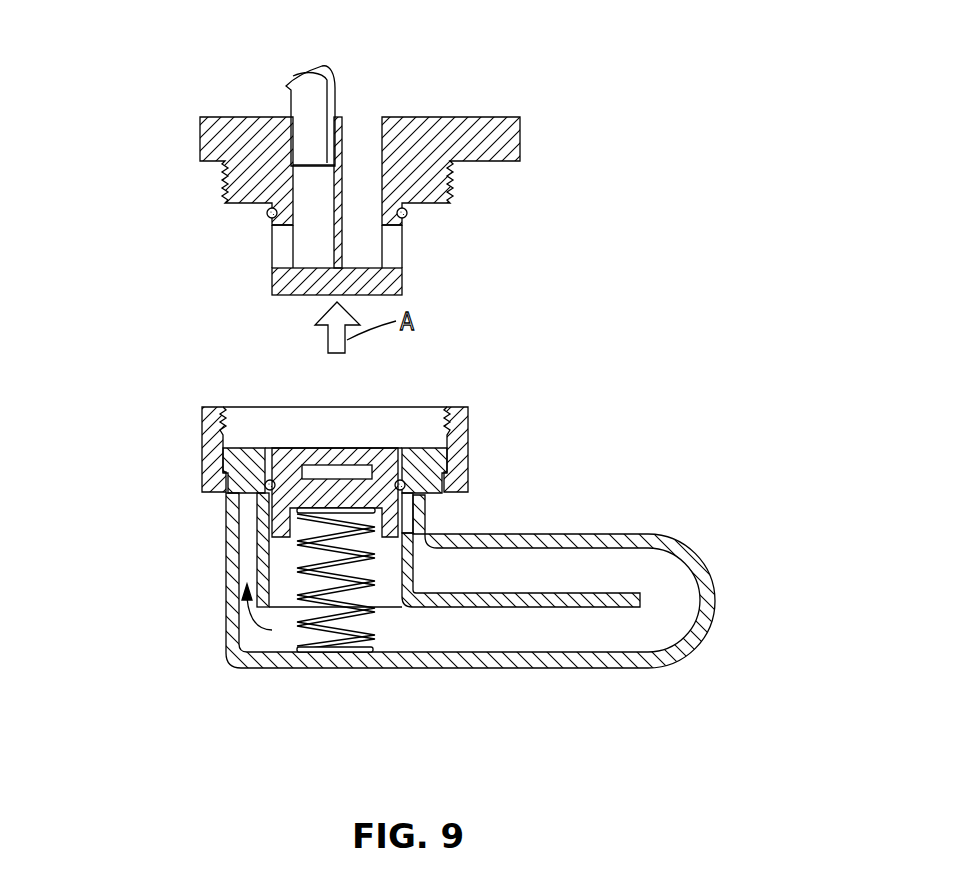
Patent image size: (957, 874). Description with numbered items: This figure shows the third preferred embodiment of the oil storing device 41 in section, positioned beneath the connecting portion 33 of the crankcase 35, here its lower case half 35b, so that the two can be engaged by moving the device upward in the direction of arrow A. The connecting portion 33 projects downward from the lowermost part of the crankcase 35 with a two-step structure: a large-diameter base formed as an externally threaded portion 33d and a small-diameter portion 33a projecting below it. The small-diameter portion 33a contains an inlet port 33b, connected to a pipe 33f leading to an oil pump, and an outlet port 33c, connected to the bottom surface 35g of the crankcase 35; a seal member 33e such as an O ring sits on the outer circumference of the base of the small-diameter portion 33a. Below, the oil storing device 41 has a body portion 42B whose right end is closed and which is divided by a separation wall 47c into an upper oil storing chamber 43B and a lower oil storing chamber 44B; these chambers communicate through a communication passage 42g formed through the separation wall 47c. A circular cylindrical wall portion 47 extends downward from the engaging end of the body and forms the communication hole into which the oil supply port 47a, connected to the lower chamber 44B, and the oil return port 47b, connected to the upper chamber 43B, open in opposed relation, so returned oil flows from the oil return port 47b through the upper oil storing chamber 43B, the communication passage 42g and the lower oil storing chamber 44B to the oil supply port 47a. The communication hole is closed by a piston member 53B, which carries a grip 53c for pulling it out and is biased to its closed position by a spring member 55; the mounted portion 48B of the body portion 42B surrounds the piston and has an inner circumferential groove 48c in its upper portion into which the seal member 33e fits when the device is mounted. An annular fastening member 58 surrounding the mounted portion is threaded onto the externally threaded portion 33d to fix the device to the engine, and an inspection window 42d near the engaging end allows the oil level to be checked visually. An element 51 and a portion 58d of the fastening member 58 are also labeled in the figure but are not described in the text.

The connecting portion 33 is at (326, 160).
The small-diameter portion 33a is at (283, 300).
The inlet port 33b is at (278, 240).
The outlet port 33c is at (390, 257).
The externally threaded portion 33d is at (452, 181).
The seal member 33e is at (408, 215).
The pipe 33f is at (322, 88).
The crankcase 35 is at (342, 125).
The lower case half 35b is at (243, 117).
The bottom surface 35g is at (403, 117).
The oil storing device 41 is at (408, 543).
The body portion 42B is at (430, 590).
The inspection window 42d is at (258, 502).
The communication passage 42g is at (680, 588).
The upper oil storing chamber 43B is at (587, 565).
The lower oil storing chamber 44B is at (593, 640).
The circular cylindrical wall portion 47 is at (368, 609).
The oil supply port 47a is at (265, 505).
The oil return port 47b is at (410, 512).
The separation wall 47c is at (532, 607).
The mounted portion 48B is at (440, 430).
The inner circumferential groove 48c is at (270, 480).
The seal ring 51 is at (415, 540).
The piston member 53B is at (370, 462).
The grip 53c is at (335, 444).
The spring member 55 is at (373, 627).
The fastening member 58 is at (369, 407).
The nut thread 58d is at (230, 408).